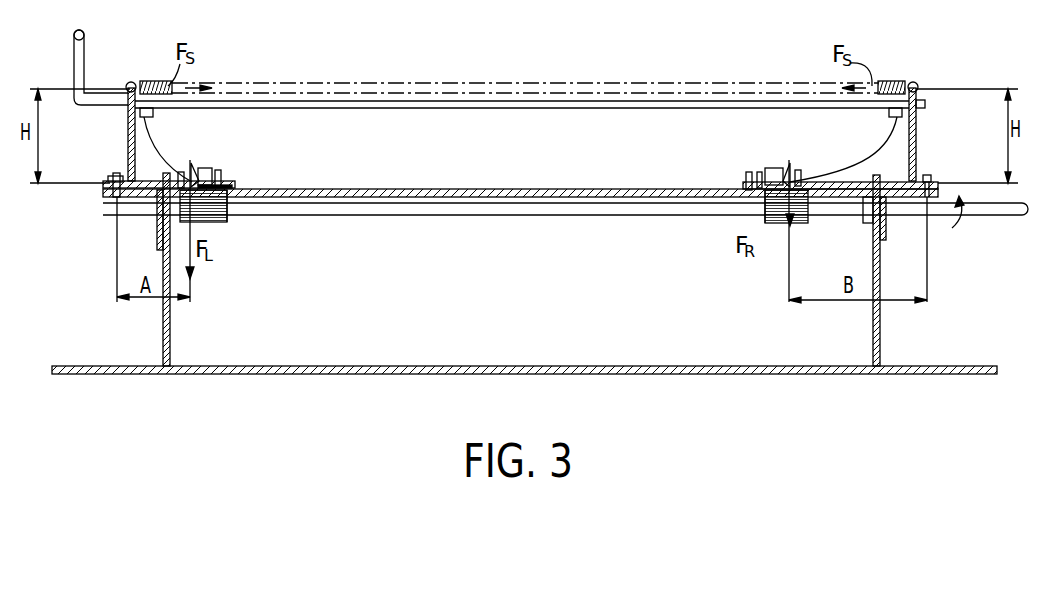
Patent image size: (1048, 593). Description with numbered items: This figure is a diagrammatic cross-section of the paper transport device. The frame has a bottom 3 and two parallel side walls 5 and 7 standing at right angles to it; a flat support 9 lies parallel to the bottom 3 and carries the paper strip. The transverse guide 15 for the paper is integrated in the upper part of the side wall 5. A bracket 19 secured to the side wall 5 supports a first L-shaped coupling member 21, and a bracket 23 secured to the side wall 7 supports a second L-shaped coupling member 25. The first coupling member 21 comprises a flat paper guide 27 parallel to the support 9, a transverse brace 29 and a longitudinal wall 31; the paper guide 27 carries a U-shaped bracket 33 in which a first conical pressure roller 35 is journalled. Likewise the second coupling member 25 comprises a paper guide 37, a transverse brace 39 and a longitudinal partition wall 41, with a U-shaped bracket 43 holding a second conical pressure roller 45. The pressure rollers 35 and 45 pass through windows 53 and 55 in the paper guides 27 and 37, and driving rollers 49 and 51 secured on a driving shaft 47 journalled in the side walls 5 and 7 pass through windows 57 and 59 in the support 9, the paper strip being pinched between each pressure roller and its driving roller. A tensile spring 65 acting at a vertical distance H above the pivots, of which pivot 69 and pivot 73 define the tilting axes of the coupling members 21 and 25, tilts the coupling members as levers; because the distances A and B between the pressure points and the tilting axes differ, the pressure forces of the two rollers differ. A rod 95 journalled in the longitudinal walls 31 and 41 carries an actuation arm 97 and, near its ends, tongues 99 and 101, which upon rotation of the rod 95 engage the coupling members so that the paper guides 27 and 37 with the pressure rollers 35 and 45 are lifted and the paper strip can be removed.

The bottom 3 is at (685, 374).
The side wall 5 is at (163, 333).
The side wall 7 is at (867, 337).
The flat support 9 is at (101, 67).
The transverse guide 15 is at (158, 198).
The bracket 19 is at (135, 192).
The first L-shaped coupling member 21 is at (99, 131).
The bracket 23 is at (914, 200).
The second L-shaped coupling member 25 is at (951, 131).
The paper guide 27 is at (138, 194).
The transverse brace 29 is at (163, 162).
The longitudinal wall 31 is at (127, 124).
The U-shaped bracket 33 is at (221, 173).
The first conical pressure roller 35 is at (196, 163).
The paper guide 37 is at (860, 182).
The transverse brace 39 is at (841, 165).
The longitudinal partition wall 41 is at (916, 124).
The U-shaped bracket 43 is at (758, 178).
The second conical pressure roller 45 is at (788, 170).
The driving shaft 47 is at (304, 207).
The driving roller 49 is at (213, 223).
The driving roller 51 is at (795, 228).
The window 53 is at (237, 184).
The window 55 is at (751, 183).
The window 57 is at (235, 194).
The window 59 is at (752, 199).
The tensile spring 65 is at (523, 82).
The pivot 69 is at (110, 181).
The pivot 73 is at (930, 180).
The rod 95 is at (313, 104).
The actuation arm 97 is at (74, 52).
The tongue 99 is at (150, 112).
The tongue 101 is at (893, 110).